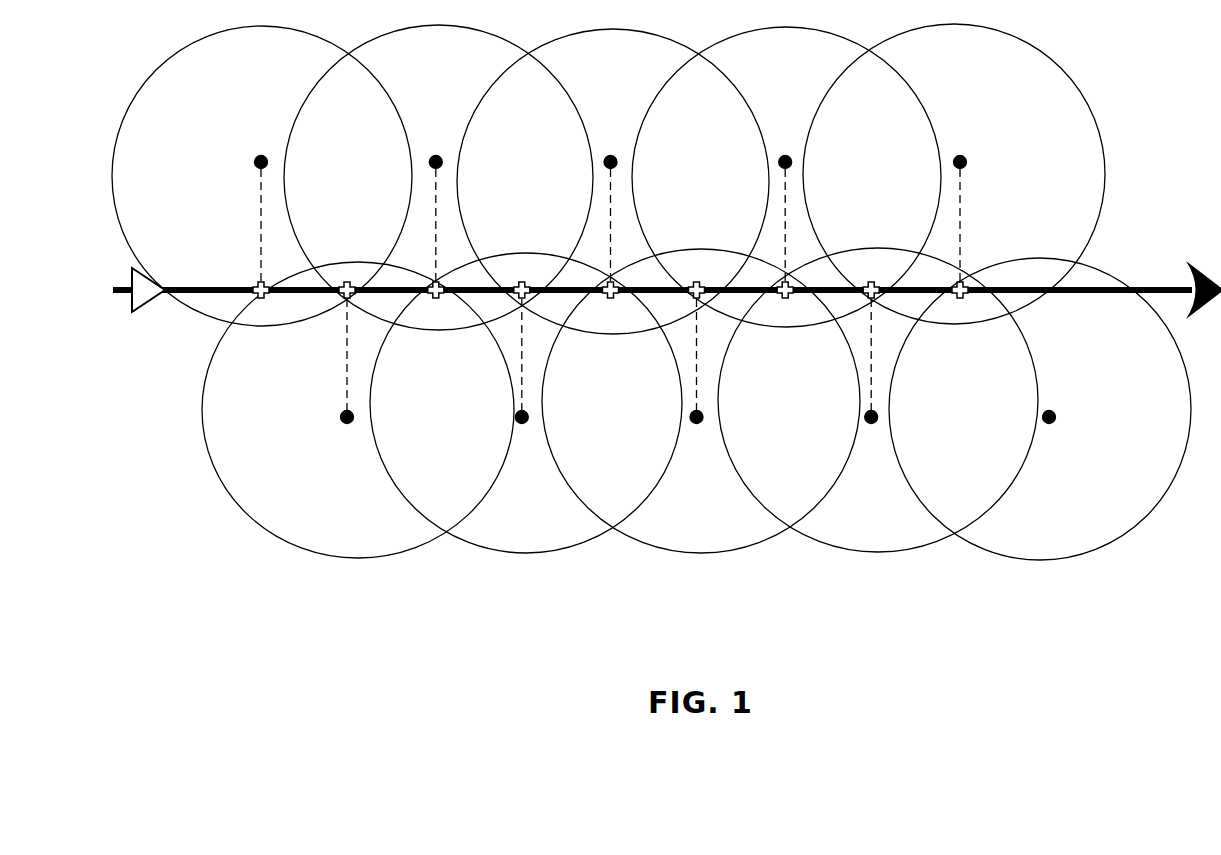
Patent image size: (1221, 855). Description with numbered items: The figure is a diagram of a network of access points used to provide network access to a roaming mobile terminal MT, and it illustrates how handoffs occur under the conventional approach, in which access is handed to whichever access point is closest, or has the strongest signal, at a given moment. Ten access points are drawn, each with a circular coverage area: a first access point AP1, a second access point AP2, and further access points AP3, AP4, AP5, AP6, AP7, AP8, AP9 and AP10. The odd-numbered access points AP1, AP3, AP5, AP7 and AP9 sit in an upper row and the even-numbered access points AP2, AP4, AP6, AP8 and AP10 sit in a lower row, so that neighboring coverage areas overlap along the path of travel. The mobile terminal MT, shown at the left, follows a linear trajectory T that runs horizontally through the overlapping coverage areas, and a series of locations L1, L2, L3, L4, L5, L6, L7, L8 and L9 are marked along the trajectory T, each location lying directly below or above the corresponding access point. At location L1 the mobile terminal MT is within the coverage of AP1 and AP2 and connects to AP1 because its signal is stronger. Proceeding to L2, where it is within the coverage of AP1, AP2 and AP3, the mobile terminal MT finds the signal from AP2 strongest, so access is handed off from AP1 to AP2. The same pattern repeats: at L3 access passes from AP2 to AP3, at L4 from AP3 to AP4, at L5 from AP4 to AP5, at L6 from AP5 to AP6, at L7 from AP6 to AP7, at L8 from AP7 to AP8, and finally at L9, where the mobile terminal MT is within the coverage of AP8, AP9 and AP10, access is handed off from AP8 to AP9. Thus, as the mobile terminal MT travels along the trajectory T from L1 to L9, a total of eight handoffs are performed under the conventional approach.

The first access point AP1 is at (262, 176).
The second access point AP2 is at (358, 410).
The access point AP3 is at (438, 177).
The access point AP4 is at (526, 403).
The access point AP5 is at (613, 181).
The access point AP6 is at (701, 401).
The access point AP7 is at (786, 177).
The access point AP8 is at (878, 400).
The access point AP9 is at (954, 174).
The access point AP10 is at (1040, 409).
The location L1 is at (276, 269).
The location L2 is at (360, 317).
The location L3 is at (449, 269).
The location L4 is at (535, 317).
The location L5 is at (625, 266).
The location L6 is at (710, 315).
The location L7 is at (798, 269).
The location L8 is at (885, 315).
The location L9 is at (974, 265).
The mobile terminal MT is at (149, 305).
The trajectory T is at (667, 281).